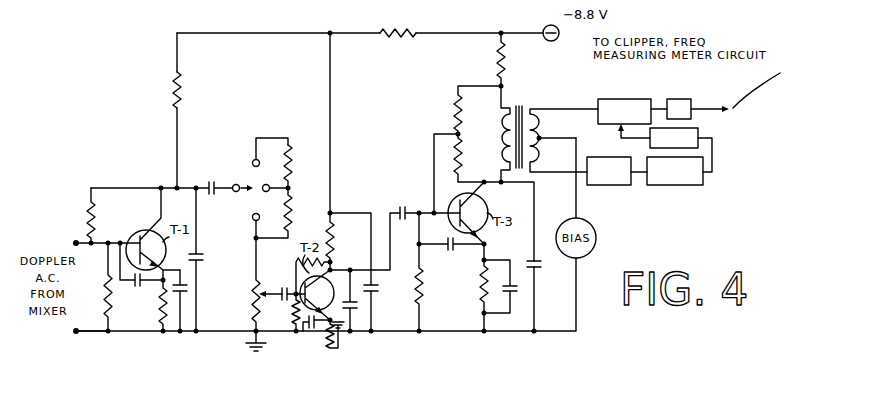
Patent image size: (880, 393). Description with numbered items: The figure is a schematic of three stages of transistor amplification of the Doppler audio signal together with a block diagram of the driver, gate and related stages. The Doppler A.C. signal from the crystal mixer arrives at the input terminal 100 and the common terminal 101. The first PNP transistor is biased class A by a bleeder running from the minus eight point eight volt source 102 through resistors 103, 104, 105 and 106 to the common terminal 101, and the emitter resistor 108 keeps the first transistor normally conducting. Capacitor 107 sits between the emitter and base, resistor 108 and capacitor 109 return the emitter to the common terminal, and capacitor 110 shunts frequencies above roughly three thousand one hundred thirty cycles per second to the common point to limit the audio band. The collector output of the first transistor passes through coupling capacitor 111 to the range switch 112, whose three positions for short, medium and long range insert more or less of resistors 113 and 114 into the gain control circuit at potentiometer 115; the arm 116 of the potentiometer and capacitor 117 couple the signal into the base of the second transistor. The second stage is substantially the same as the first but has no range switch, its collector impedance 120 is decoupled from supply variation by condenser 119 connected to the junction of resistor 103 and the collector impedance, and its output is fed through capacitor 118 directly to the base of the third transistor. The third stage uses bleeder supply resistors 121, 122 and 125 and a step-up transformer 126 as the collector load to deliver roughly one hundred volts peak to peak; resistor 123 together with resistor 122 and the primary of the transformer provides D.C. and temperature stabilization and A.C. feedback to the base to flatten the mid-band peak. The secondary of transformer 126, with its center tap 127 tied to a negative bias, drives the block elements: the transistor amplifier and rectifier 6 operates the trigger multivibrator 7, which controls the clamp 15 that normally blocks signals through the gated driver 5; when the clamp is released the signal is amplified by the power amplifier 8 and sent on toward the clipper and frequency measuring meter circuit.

The input terminal 100 is at (76, 243).
The common terminal 101 is at (68, 337).
The minus 8.8 volt source 102 is at (498, 32).
The resistor 103 is at (390, 30).
The resistor 104 is at (173, 99).
The resistor 105 is at (94, 216).
The resistor 106 is at (106, 298).
The capacitor 107 is at (135, 287).
The emitter resistor 108 is at (160, 302).
The capacitor 109 is at (182, 296).
The capacitor 110 is at (202, 258).
The coupling capacitor 111 is at (217, 182).
The range switch 112 is at (253, 209).
The resistor 113 is at (289, 171).
The resistor 114 is at (289, 211).
The potentiometer 115 is at (257, 298).
The arm of potentiometer 116 is at (275, 305).
The capacitor 117 is at (289, 290).
The capacitor 118 is at (413, 203).
The condenser 119 is at (375, 288).
The collector impedance 120 is at (333, 246).
The bleeder supply resistor 121 is at (503, 58).
The resistor 122 is at (452, 112).
The resistor 123 is at (452, 154).
The bleeder supply resistor 125 is at (420, 301).
The step-up transformer 126 is at (523, 106).
The center tap 127 is at (544, 139).
The gated driver 5 is at (621, 99).
The transistor amplifier and rectifier 6 is at (605, 185).
The trigger multivibrator 7 is at (688, 185).
The power amplifier 8 is at (682, 99).
The clamp 15 is at (699, 131).